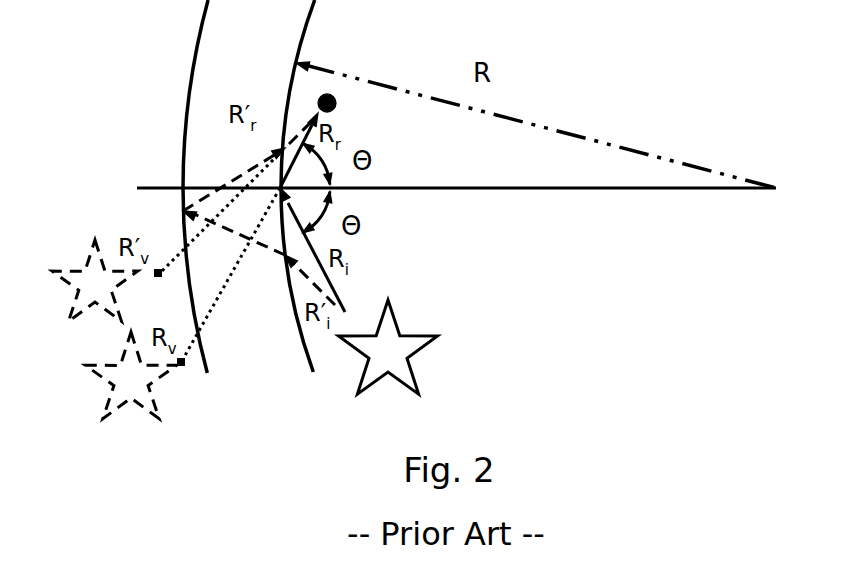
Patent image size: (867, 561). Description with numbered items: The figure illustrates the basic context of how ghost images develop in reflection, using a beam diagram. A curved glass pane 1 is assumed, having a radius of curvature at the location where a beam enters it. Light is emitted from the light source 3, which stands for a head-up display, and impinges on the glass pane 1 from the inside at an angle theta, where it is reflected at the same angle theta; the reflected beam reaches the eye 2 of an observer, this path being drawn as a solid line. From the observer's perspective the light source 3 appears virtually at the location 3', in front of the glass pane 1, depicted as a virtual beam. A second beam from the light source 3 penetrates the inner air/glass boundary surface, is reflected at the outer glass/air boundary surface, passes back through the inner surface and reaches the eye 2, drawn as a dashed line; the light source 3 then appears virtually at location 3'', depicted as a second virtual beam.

The curved glass pane 1 is at (183, 97).
The eye 2 is at (337, 105).
The light source 3 is at (388, 347).
The virtual location of light source 3' is at (122, 376).
The virtual ghost image location of light source 3'' is at (88, 280).